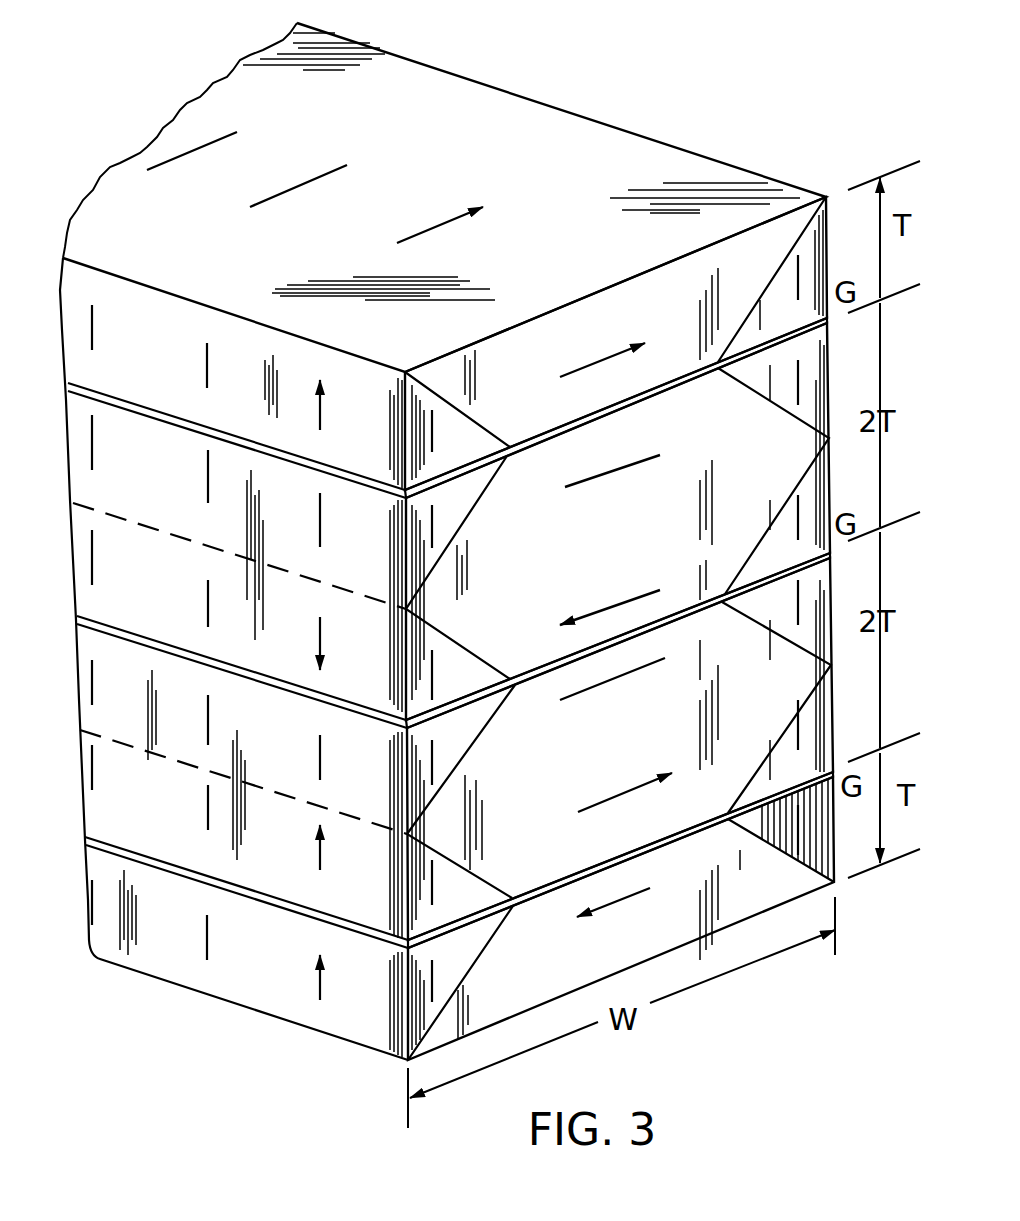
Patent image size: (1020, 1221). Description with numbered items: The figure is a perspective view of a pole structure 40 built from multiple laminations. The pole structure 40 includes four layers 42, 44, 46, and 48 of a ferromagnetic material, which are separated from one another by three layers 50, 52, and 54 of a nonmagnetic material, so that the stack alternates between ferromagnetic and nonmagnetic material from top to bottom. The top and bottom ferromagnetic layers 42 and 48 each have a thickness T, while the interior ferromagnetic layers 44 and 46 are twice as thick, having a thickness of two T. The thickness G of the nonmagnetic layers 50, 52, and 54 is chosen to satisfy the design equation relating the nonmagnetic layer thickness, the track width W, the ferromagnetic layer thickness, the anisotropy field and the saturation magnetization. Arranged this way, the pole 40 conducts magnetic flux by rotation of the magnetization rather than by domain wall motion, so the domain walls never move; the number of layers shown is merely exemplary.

The pole structure 40 is at (637, 126).
The ferromagnetic layer 42 is at (520, 387).
The ferromagnetic layer 44 is at (538, 548).
The ferromagnetic layer 46 is at (547, 778).
The ferromagnetic layer 48 is at (542, 981).
The nonmagnetic layer 50 is at (677, 390).
The nonmagnetic layer 52 is at (690, 612).
The nonmagnetic layer 54 is at (652, 850).